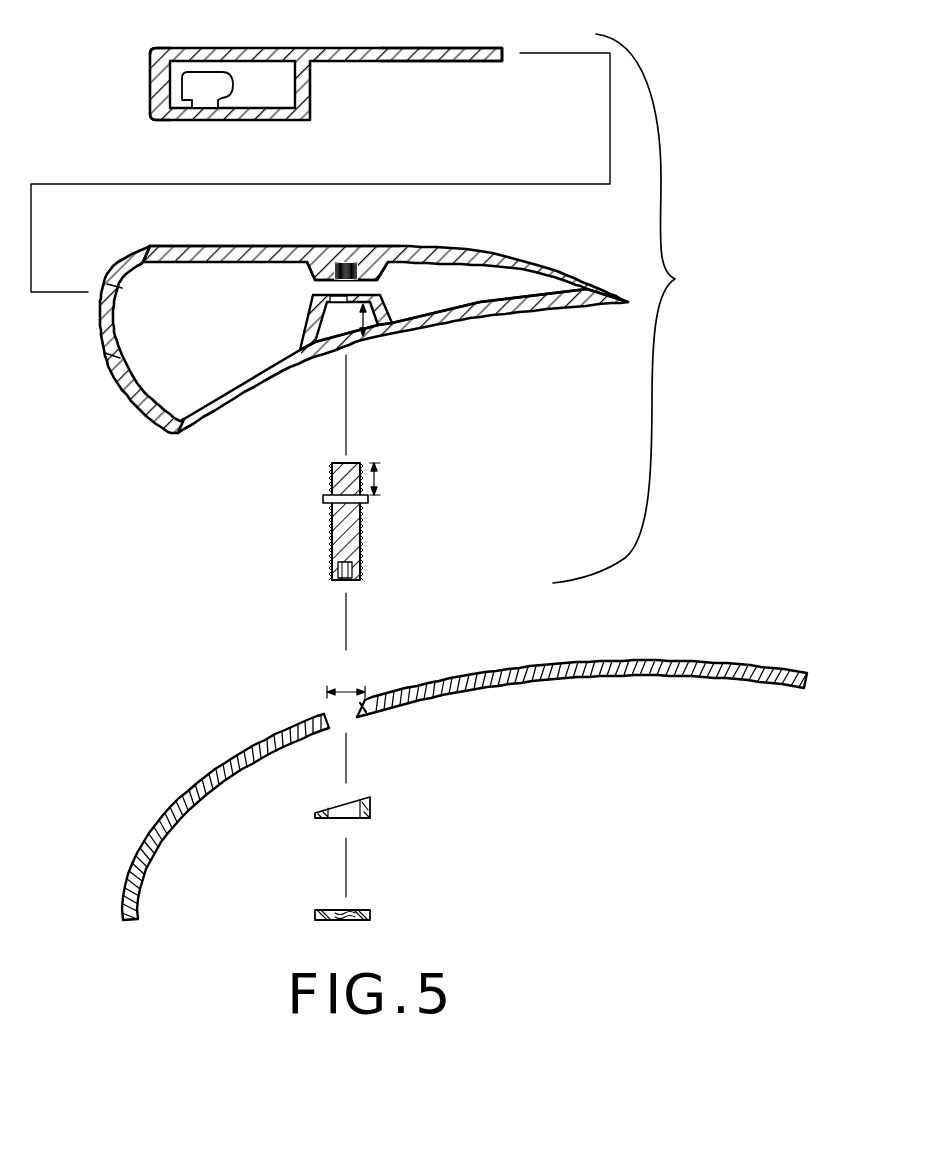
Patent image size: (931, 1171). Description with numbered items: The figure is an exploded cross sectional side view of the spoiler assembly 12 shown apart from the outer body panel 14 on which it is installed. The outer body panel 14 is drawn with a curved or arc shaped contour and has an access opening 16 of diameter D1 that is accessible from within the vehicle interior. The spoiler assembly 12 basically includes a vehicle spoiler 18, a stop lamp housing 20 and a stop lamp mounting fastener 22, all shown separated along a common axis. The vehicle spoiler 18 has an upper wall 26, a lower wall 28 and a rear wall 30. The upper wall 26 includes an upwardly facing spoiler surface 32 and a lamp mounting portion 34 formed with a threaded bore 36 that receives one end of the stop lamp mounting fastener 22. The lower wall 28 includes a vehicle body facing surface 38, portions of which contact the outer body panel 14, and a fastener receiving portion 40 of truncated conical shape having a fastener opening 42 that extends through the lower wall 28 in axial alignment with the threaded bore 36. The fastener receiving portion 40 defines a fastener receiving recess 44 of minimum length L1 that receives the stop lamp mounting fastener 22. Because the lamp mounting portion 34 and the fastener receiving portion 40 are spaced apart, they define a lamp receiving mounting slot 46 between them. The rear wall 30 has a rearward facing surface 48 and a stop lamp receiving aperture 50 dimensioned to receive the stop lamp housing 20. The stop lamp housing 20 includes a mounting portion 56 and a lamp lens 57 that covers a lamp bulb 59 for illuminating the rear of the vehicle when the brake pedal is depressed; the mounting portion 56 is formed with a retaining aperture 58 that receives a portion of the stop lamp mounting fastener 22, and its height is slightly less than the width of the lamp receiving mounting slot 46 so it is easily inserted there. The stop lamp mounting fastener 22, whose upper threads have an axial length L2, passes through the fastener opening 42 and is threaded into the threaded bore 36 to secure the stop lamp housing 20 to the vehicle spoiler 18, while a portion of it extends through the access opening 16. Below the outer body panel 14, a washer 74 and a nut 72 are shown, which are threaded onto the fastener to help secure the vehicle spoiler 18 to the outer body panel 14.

The spoiler assembly 12 is at (628, 308).
The outer body panel 14 is at (549, 672).
The access opening 16 is at (355, 720).
The vehicle spoiler 18 is at (333, 317).
The stop lamp housing 20 is at (330, 68).
The stop lamp mounting fastener 22 is at (392, 520).
The upper wall 26 is at (458, 250).
The lower wall 28 is at (503, 302).
The rear wall 30 is at (117, 372).
The upwardly facing spoiler surface 32 is at (290, 247).
The lamp mounting portion 34 is at (310, 272).
The threaded bore 36 is at (349, 264).
The vehicle body facing surface 38 is at (432, 328).
The fastener receiving portion 40 is at (310, 312).
The fastener opening 42 is at (338, 288).
The fastener receiving recess 44 is at (323, 350).
The lamp receiving mounting slot 46 is at (382, 281).
The rearward facing surface 48 is at (125, 393).
The stop lamp receiving aperture 50 is at (108, 287).
The mounting portion 56 is at (469, 36).
The lamp lens 57 is at (153, 73).
The retaining aperture 58 is at (388, 58).
The lamp bulb 59 is at (208, 85).
The nut 72 is at (372, 914).
The washer 74 is at (372, 803).
The minimum length of fastener receiving recess L1 is at (363, 343).
The axial length of threads L2 is at (376, 479).
The diameter of access opening D1 is at (340, 690).